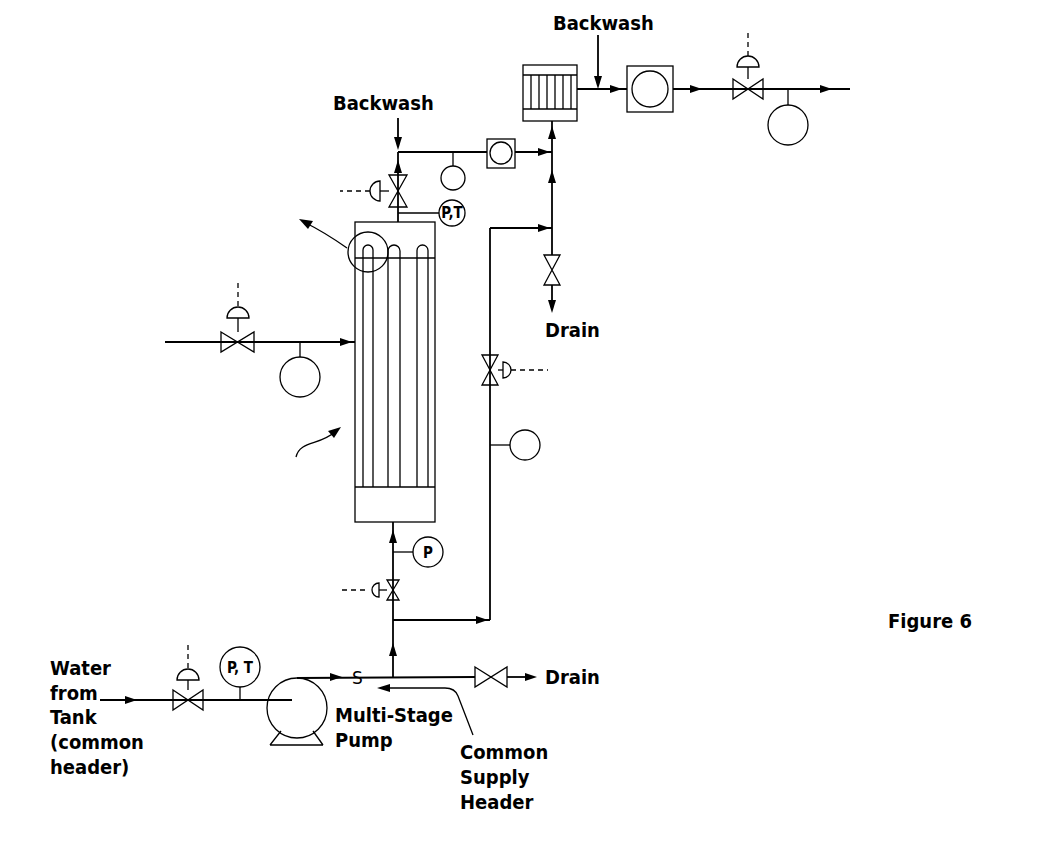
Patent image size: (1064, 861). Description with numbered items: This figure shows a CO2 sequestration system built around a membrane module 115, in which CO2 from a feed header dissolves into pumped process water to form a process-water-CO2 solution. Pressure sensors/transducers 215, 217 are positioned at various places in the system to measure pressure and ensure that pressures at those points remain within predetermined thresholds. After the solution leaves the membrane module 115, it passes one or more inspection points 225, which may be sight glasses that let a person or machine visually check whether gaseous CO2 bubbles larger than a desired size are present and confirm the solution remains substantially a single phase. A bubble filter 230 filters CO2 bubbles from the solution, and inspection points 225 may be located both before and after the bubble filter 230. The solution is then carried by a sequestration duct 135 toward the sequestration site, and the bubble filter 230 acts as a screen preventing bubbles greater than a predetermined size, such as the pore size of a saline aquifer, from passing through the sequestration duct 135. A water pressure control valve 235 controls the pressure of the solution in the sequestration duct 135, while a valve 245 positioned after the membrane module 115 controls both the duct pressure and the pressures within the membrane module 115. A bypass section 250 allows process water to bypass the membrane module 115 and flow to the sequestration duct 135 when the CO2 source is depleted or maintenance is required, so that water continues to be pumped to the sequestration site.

The membrane module 115 is at (322, 354).
The sequestration duct 135 is at (803, 88).
The pressure sensor/transducer 215 is at (280, 377).
The pressure sensor/transducer 217 is at (441, 172).
The inspection point 225 is at (629, 110).
The bubble filter 230 is at (516, 98).
The water pressure control valve 235 is at (375, 176).
The valve 245 is at (760, 105).
The bypass section 250 is at (491, 530).